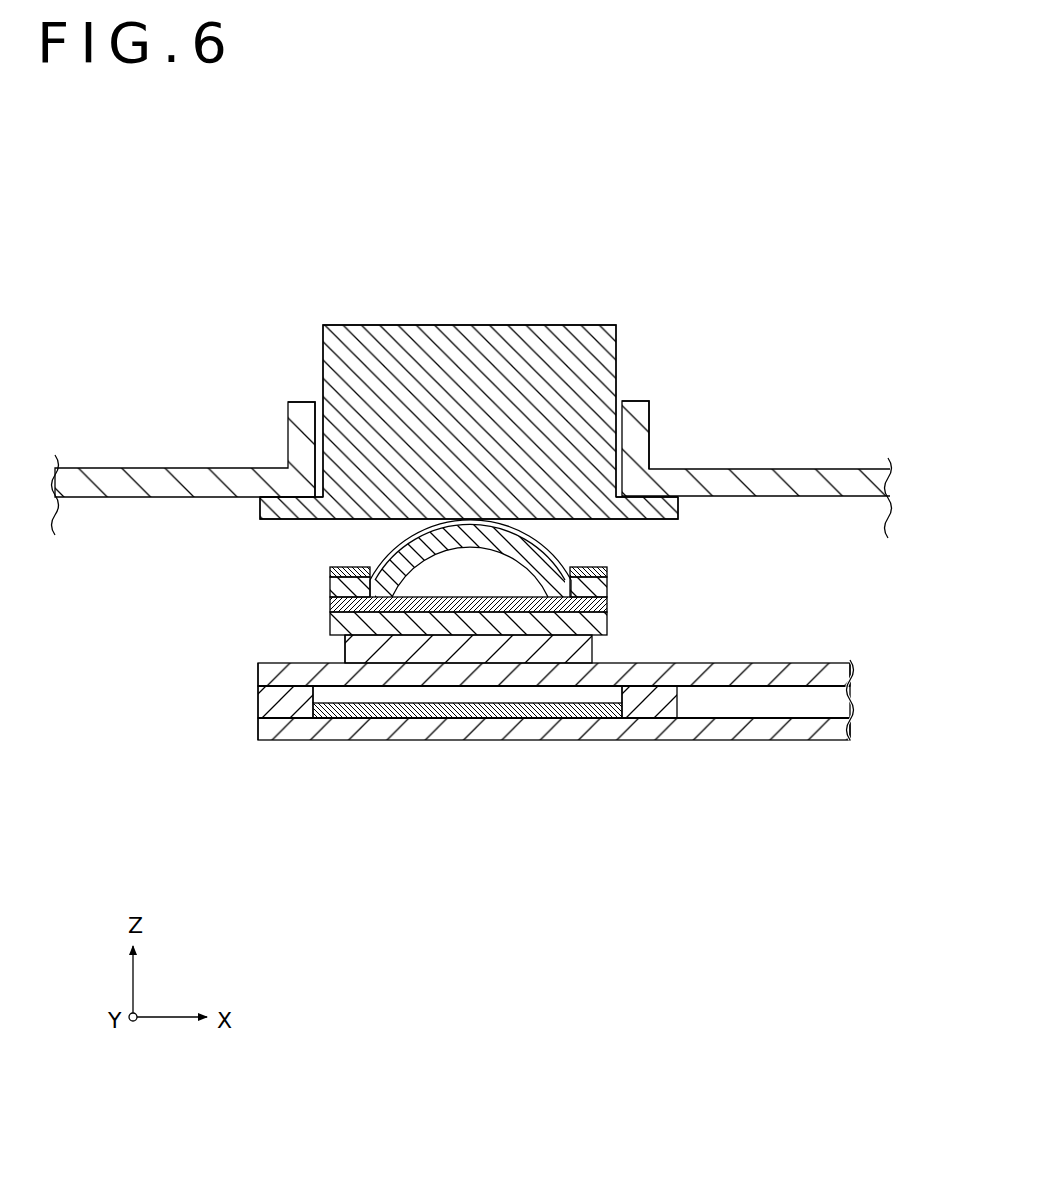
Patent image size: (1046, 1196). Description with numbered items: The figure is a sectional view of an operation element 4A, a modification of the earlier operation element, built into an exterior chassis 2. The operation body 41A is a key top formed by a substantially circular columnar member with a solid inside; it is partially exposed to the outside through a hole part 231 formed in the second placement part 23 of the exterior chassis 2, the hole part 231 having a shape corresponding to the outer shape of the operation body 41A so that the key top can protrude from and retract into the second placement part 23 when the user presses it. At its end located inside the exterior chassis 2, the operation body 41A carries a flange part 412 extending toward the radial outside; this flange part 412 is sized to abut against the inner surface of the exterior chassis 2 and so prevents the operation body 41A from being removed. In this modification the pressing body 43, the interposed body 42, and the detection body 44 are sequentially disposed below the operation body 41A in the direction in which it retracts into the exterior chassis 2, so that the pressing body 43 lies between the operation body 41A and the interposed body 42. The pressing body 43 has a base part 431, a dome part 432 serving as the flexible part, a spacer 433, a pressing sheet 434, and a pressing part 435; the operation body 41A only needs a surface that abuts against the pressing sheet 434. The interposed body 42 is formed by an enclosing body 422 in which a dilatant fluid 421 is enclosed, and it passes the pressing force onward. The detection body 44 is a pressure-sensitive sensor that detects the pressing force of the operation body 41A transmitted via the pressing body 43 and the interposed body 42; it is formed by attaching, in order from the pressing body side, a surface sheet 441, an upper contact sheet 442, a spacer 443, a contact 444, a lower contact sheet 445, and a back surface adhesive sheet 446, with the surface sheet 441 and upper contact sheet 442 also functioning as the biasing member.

The exterior chassis 2 is at (472, 469).
The second placement part 23 is at (472, 469).
The hole part 231 is at (626, 411).
The operation element 4A is at (462, 473).
The operation body 41A is at (516, 397).
The flange part 412 is at (678, 507).
The pressing body 43 is at (413, 578).
The base part 431 is at (607, 603).
The dome part 432 is at (438, 545).
The spacer 433 is at (607, 588).
The pressing sheet 434 is at (607, 571).
The pressing part 435 is at (607, 624).
The interposed body 42 is at (413, 647).
The dilatant fluid 421 is at (582, 646).
The enclosing body 422 is at (345, 652).
The detection body 44 is at (462, 704).
The surface sheet 441 is at (773, 668).
The upper contact sheet 442 is at (258, 683).
The spacer 443 is at (297, 722).
The contact 444 is at (443, 720).
The lower contact sheet 445 is at (258, 716).
The back surface adhesive sheet 446 is at (573, 722).